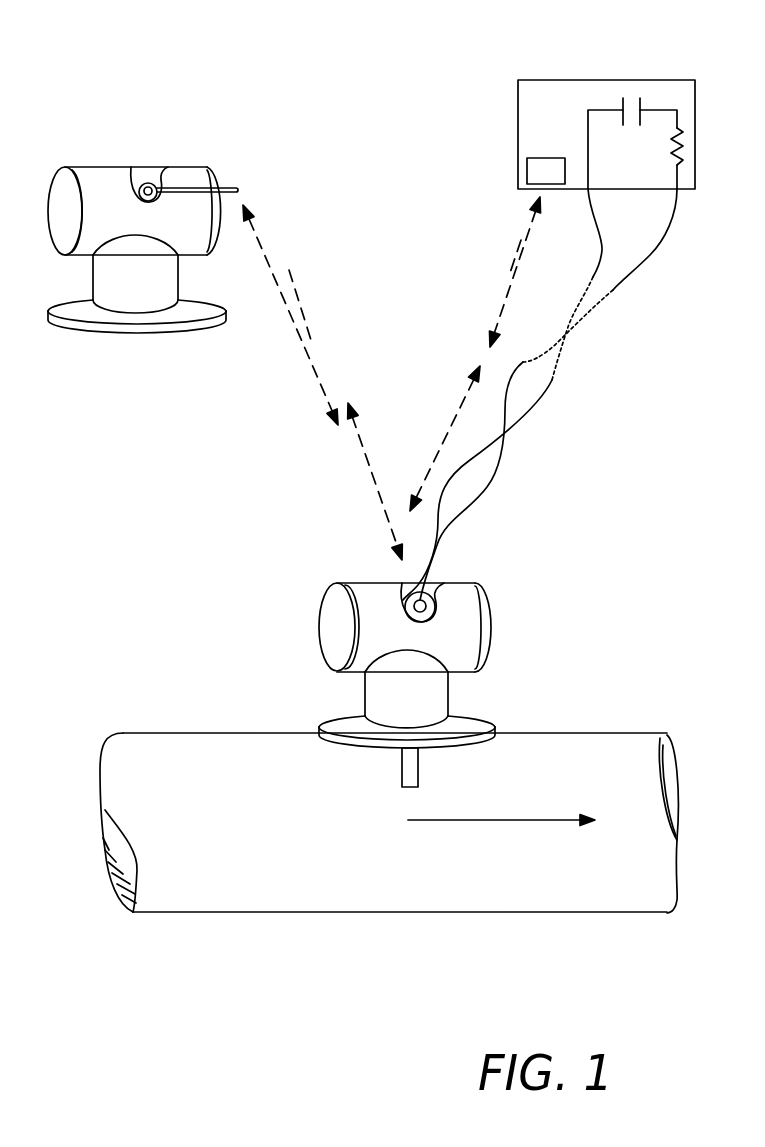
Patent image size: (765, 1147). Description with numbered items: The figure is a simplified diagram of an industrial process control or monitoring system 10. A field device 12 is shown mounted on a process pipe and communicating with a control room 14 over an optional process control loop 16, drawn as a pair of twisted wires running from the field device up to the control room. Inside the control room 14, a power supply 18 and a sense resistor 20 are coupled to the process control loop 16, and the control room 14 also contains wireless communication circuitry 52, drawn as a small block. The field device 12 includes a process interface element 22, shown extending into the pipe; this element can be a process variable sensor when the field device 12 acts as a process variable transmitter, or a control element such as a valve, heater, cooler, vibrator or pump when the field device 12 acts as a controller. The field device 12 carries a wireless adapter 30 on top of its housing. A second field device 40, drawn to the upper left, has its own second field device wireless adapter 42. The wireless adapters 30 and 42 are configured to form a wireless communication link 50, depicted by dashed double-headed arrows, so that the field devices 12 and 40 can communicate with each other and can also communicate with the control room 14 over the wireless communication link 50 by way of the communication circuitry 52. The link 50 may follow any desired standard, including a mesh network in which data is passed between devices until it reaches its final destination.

The industrial process control or monitoring system 10 is at (322, 158).
The field device 12 is at (500, 607).
The control room 14 is at (518, 113).
The process control loop 16 is at (508, 398).
The power supply 18 is at (622, 102).
The sense resistor 20 is at (640, 103).
The process interface element 22 is at (400, 786).
The wireless adapter 30 is at (414, 612).
The second field device 40 is at (100, 167).
The second field device wireless adapter 42 is at (185, 189).
The wireless communication link 50 is at (366, 447).
The wireless communication circuitry 52 is at (533, 173).